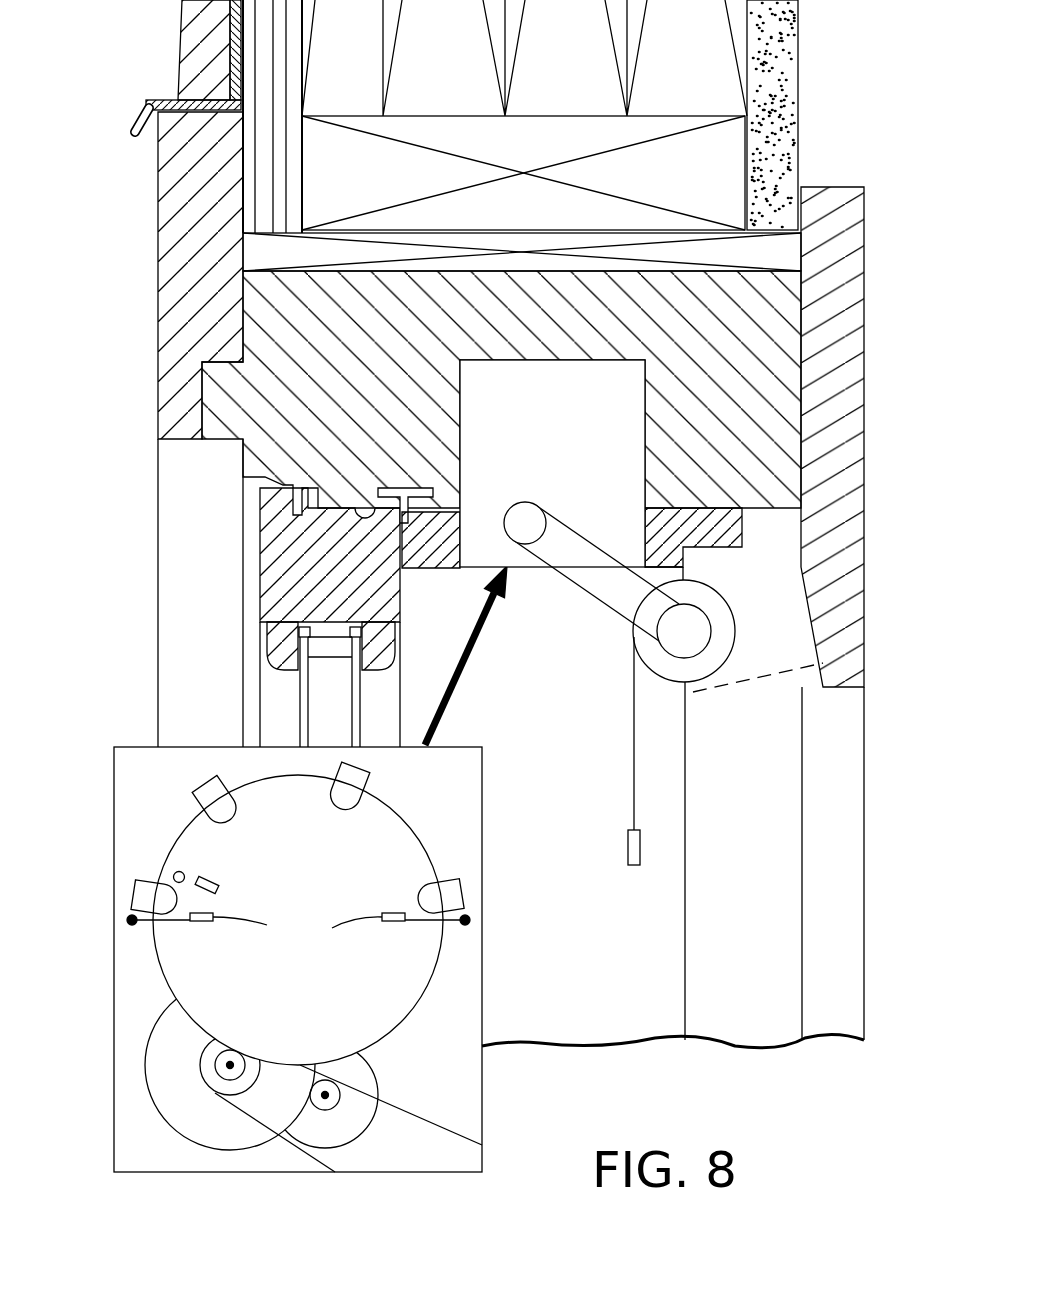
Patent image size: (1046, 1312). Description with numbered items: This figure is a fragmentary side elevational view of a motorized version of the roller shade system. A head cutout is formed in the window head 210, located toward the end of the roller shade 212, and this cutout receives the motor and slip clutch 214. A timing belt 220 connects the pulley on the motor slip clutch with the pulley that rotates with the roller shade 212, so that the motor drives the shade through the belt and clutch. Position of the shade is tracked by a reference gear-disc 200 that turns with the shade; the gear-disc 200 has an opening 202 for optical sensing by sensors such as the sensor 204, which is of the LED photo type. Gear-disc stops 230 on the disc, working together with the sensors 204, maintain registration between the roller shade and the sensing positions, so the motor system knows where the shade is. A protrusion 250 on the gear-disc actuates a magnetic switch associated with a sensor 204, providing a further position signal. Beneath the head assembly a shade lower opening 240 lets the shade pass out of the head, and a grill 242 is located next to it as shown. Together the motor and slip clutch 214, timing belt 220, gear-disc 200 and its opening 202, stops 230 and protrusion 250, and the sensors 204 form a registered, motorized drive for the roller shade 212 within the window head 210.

The reference gear-disc 200 is at (190, 960).
The opening 202 is at (172, 875).
The sensor 204 is at (213, 797).
The window head 210 is at (578, 441).
The roller shade 212 is at (634, 743).
The motor and slip clutch 214 is at (153, 1190).
The timing belt 220 is at (578, 592).
The gear-disc stops 230 is at (298, 933).
The shade lower opening 240 is at (634, 845).
The grill 242 is at (748, 678).
The protrusion 250 is at (212, 880).